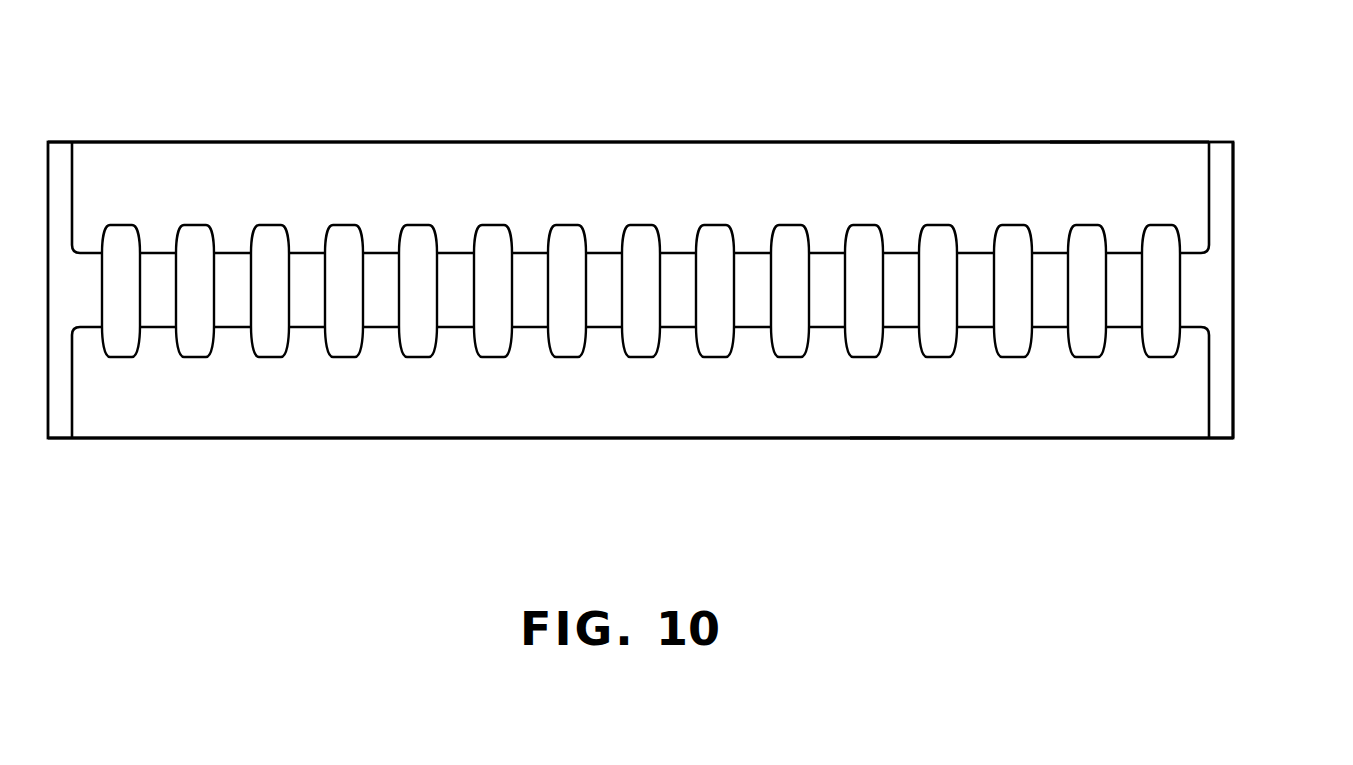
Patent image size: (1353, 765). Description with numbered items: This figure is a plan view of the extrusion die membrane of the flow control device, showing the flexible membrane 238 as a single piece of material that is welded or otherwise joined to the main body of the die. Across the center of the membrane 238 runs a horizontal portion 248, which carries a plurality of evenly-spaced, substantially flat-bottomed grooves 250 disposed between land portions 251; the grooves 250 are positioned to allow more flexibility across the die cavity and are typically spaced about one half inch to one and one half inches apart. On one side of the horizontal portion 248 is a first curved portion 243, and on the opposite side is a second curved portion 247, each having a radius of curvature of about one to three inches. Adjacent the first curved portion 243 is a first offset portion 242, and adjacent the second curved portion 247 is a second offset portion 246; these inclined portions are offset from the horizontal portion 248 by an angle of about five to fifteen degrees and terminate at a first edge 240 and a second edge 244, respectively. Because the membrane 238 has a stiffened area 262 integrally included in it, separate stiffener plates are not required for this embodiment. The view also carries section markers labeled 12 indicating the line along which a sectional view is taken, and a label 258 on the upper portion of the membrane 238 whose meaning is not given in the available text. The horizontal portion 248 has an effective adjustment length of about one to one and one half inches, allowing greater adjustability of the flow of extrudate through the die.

The flexible membrane 238 is at (791, 122).
The top wall 258 is at (440, 152).
The land portions 251 is at (612, 250).
The stiffened area 262 is at (874, 175).
The second edge 244 is at (997, 165).
The second offset portion 246 is at (1097, 158).
The second curved portion 247 is at (1183, 195).
The horizontal portion 248 is at (1212, 284).
The first curved portion 243 is at (1173, 358).
The flat-bottomed grooves 250 is at (343, 350).
The first edge 240 is at (837, 438).
The first offset portion 242 is at (915, 402).
The section line 12 is at (644, 120).